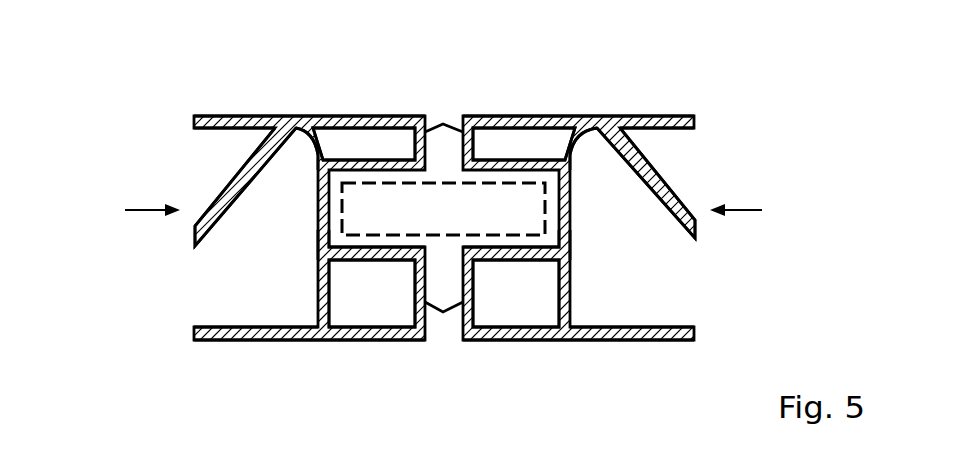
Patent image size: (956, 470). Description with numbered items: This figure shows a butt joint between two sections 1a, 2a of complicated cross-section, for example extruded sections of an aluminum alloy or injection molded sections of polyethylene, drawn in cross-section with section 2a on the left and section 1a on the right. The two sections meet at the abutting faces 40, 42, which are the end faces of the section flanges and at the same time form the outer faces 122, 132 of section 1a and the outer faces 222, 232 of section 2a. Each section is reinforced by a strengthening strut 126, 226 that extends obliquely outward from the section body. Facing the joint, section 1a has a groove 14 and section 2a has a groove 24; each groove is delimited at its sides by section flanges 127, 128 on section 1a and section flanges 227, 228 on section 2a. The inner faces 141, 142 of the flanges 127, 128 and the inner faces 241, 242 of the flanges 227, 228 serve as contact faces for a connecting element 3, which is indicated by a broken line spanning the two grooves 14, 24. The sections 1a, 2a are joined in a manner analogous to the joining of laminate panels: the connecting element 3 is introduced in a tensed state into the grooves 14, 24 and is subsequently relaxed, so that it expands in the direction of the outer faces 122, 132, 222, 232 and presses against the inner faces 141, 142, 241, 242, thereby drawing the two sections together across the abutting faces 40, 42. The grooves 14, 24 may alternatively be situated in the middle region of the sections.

The connecting element 3 is at (452, 223).
The section 1a is at (755, 212).
The section 2a is at (132, 212).
The groove 14 is at (553, 213).
The groove 24 is at (333, 213).
The abutting face 40 is at (443, 124).
The abutting face 42 is at (443, 312).
The outer face 122 is at (500, 116).
The strengthening strut 126 is at (648, 176).
The section flange 127 is at (572, 130).
The section flange 128 is at (551, 253).
The outer face 132 is at (501, 340).
The inner face 141 is at (525, 248).
The inner face 142 is at (490, 160).
The outer face 222 is at (386, 116).
The strengthening strut 226 is at (242, 176).
The section flange 227 is at (315, 124).
The section flange 228 is at (337, 253).
The outer face 232 is at (387, 340).
The inner face 241 is at (362, 248).
The inner face 242 is at (390, 158).